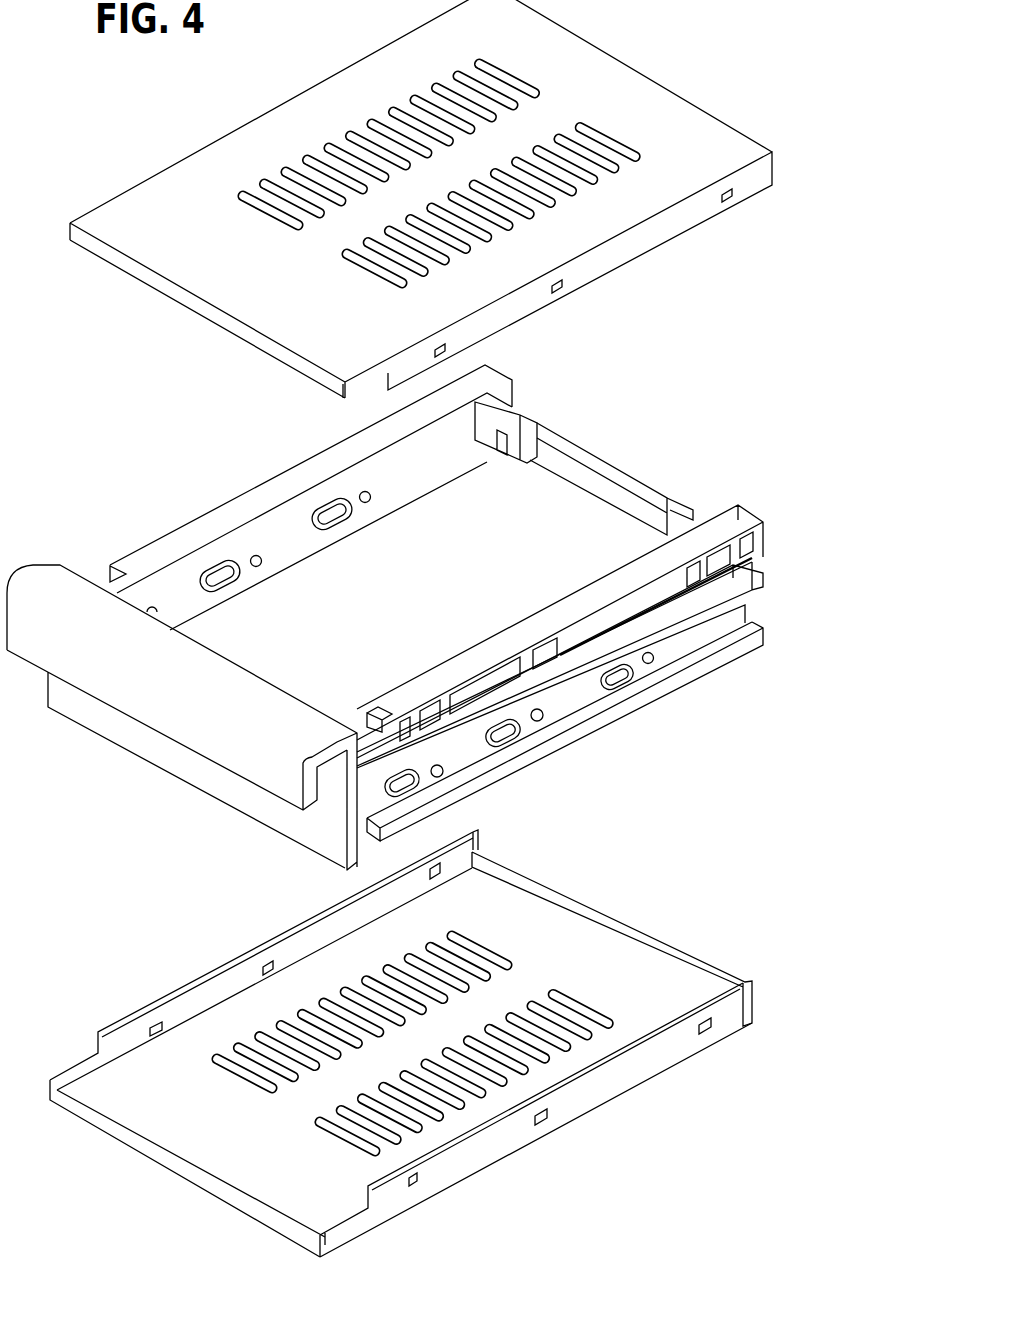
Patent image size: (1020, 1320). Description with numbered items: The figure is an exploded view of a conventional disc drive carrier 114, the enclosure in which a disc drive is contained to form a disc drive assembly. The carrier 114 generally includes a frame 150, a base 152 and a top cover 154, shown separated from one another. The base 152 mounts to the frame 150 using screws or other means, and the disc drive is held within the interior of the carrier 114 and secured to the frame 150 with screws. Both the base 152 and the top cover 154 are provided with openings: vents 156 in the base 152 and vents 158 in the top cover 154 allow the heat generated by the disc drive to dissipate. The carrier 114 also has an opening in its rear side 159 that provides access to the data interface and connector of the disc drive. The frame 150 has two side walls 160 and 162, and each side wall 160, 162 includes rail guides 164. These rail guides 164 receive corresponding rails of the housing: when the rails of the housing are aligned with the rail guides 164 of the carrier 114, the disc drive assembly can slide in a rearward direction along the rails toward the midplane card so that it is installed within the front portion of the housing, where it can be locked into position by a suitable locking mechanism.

The disc drive carrier 114 is at (722, 93).
The frame 150 is at (762, 543).
The base 152 is at (625, 1065).
The top cover 154 is at (700, 212).
The vents 156 is at (278, 1018).
The vents 158 is at (300, 157).
The rear side 159 is at (573, 443).
The side wall 160 is at (587, 697).
The side wall 162 is at (237, 500).
The rail guides 164 is at (720, 598).